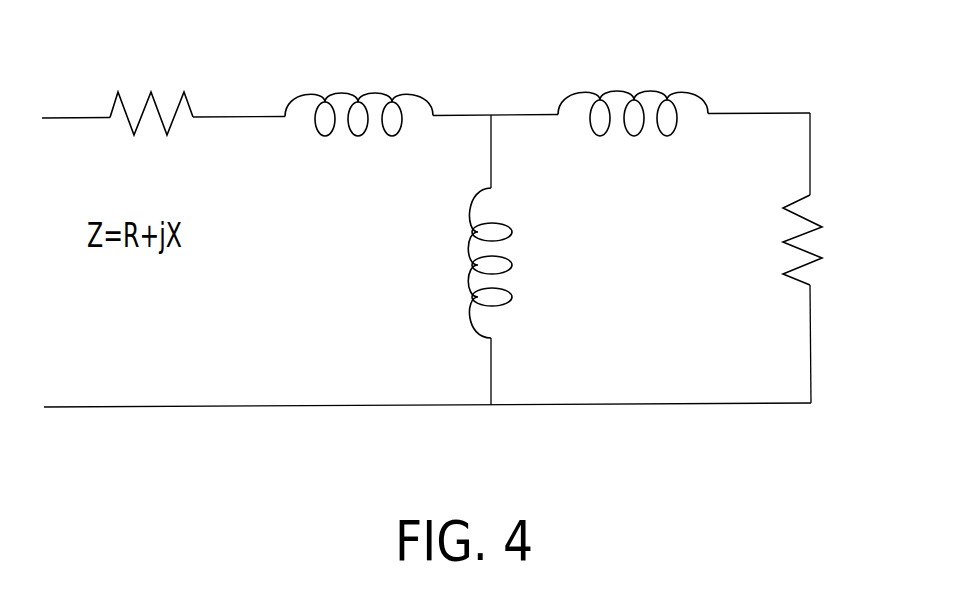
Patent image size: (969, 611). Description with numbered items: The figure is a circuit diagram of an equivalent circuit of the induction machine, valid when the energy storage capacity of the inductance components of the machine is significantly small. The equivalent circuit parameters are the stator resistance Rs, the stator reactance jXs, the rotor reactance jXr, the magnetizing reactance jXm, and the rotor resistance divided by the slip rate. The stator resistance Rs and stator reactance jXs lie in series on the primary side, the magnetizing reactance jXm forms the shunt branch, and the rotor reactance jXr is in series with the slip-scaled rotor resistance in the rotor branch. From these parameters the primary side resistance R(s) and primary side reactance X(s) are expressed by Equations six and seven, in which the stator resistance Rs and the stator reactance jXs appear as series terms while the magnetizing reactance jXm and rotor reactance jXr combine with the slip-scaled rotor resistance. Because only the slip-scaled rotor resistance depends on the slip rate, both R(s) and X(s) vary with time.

The stator resistance Rs is at (151, 84).
The stator reactance jXs is at (359, 85).
The rotor reactance jXr is at (633, 88).
The magnetizing reactance jXm is at (528, 263).